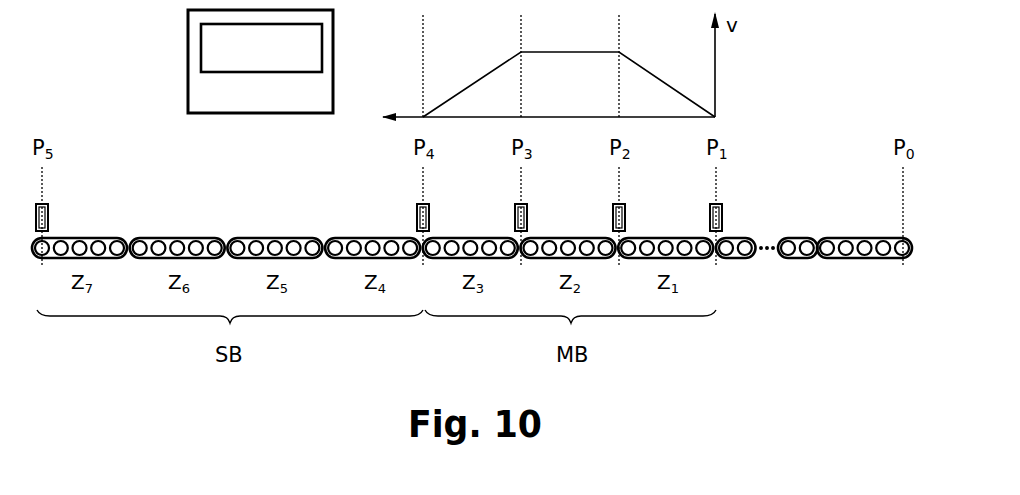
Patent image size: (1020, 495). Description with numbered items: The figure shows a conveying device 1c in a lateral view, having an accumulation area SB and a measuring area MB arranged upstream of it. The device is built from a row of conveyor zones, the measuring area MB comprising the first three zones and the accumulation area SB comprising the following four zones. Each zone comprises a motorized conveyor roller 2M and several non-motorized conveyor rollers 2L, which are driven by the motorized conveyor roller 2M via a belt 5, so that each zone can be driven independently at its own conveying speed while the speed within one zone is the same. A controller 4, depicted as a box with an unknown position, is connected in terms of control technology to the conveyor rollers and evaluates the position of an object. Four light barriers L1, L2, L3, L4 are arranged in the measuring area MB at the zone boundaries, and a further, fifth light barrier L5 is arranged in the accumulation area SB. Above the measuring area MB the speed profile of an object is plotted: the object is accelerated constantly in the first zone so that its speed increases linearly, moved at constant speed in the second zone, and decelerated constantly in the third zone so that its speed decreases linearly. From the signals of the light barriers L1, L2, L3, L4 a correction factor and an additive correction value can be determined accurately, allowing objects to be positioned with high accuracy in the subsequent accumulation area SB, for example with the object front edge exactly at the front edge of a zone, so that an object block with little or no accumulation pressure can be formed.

The controller 4 is at (197, 43).
The belt 5 is at (472, 225).
The motorized conveyor roller 2M is at (180, 240).
The non-motorized conveyor roller 2L is at (221, 243).
The conveying device 1c is at (812, 68).
The light barrier L1 is at (711, 218).
The light barrier L2 is at (613, 218).
The light barrier L3 is at (516, 218).
The light barrier L4 is at (418, 218).
The light barrier L5 is at (48, 218).